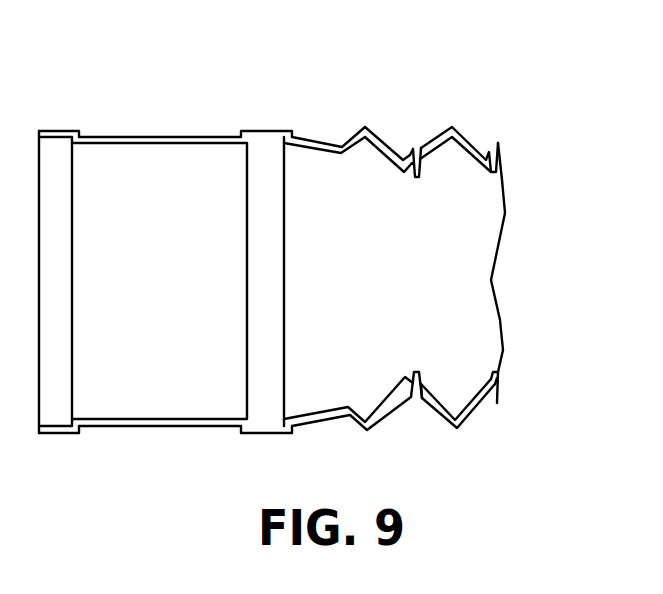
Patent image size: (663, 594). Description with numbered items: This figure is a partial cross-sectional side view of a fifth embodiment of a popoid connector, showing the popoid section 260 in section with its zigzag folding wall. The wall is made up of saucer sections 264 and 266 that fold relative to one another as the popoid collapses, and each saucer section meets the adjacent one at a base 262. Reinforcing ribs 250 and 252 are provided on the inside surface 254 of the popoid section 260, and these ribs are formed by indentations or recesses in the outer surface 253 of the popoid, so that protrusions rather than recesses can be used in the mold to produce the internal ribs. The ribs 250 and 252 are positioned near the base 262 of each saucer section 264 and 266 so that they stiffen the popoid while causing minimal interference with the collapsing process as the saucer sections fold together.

The popoid section 260 is at (462, 82).
The saucer section 264 is at (363, 127).
The base 262 is at (400, 167).
The reinforcing rib 250 is at (417, 177).
The saucer section 266 is at (457, 127).
The inside surface 254 is at (383, 395).
The outer surface 253 is at (477, 407).
The reinforcing rib 252 is at (493, 377).